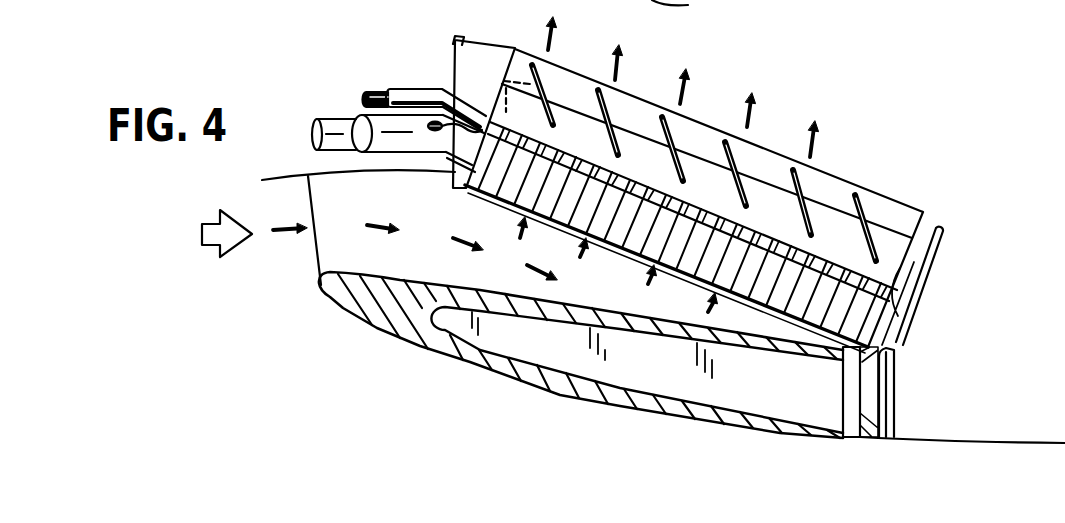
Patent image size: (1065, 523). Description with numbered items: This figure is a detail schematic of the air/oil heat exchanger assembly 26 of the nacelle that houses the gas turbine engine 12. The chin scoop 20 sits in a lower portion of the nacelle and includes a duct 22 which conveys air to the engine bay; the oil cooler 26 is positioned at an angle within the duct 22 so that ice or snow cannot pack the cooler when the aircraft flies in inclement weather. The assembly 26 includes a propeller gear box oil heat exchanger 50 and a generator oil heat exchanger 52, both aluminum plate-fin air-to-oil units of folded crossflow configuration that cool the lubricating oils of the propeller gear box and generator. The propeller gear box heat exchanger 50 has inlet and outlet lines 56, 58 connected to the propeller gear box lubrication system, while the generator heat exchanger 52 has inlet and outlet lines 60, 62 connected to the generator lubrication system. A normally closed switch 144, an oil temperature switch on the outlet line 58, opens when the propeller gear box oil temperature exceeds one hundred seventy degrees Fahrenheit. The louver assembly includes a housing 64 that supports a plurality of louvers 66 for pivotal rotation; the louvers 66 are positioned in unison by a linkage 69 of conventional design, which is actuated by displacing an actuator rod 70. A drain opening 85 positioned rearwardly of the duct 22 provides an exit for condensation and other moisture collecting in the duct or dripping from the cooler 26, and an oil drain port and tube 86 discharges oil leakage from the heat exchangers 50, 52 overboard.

The gas turbine engine 12 is at (681, 11).
The chin scoop 20 is at (323, 250).
The duct 22 is at (428, 267).
The air/oil heat exchanger assembly 26 is at (935, 205).
The propeller gear box oil heat exchanger 50 is at (918, 303).
The generator oil heat exchanger 52 is at (905, 260).
The inlet line 56 is at (338, 122).
The outlet line 58 is at (378, 152).
The inlet line 60 is at (372, 93).
The outlet line 62 is at (423, 92).
The housing 64 is at (843, 182).
The louvers 66 is at (858, 200).
The linkage 69 is at (628, 132).
The actuator rod 70 is at (502, 110).
The drain opening 85 is at (849, 438).
The oil drain port and tube 86 is at (900, 343).
The normally closed switch 144 is at (440, 134).